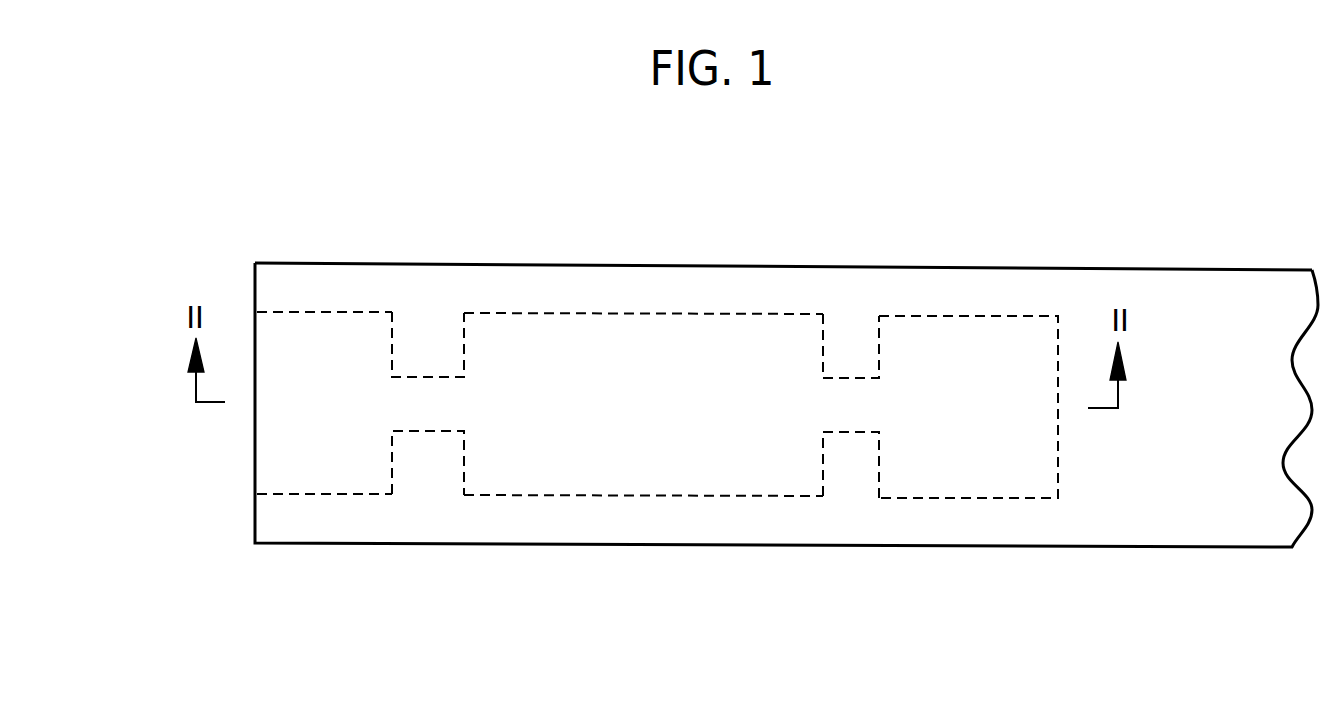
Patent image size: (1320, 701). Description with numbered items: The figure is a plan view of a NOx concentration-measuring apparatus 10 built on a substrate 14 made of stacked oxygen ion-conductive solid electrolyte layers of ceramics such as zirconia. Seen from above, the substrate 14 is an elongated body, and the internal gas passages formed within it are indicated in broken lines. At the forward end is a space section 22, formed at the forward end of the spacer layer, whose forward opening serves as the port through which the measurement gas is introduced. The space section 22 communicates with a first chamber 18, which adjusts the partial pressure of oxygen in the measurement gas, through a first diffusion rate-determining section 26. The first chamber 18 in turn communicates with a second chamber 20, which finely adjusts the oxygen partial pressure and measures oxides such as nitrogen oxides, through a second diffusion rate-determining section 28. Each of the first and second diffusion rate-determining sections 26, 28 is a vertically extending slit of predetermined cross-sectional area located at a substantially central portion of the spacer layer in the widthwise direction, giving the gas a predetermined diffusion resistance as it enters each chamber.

The NOx concentration-measuring apparatus 10 is at (1129, 235).
The substrate 14 is at (1043, 267).
The first chamber 18 is at (560, 365).
The second chamber 20 is at (983, 367).
The space section 22 is at (303, 363).
The first diffusion rate-determining section 26 is at (430, 405).
The second diffusion rate-determining section 28 is at (857, 407).